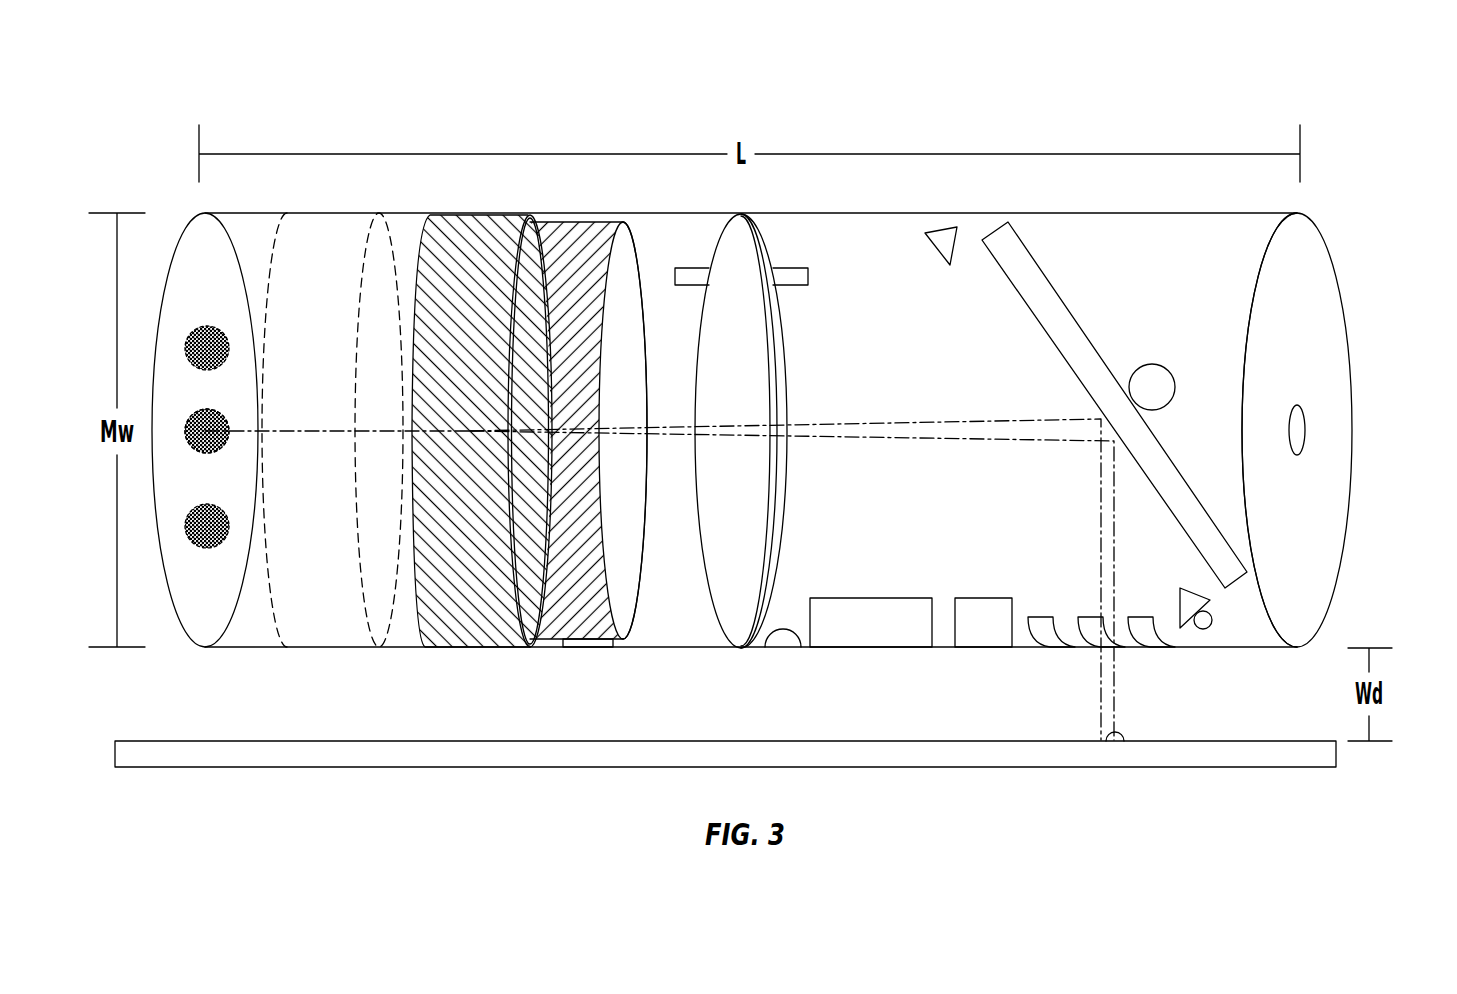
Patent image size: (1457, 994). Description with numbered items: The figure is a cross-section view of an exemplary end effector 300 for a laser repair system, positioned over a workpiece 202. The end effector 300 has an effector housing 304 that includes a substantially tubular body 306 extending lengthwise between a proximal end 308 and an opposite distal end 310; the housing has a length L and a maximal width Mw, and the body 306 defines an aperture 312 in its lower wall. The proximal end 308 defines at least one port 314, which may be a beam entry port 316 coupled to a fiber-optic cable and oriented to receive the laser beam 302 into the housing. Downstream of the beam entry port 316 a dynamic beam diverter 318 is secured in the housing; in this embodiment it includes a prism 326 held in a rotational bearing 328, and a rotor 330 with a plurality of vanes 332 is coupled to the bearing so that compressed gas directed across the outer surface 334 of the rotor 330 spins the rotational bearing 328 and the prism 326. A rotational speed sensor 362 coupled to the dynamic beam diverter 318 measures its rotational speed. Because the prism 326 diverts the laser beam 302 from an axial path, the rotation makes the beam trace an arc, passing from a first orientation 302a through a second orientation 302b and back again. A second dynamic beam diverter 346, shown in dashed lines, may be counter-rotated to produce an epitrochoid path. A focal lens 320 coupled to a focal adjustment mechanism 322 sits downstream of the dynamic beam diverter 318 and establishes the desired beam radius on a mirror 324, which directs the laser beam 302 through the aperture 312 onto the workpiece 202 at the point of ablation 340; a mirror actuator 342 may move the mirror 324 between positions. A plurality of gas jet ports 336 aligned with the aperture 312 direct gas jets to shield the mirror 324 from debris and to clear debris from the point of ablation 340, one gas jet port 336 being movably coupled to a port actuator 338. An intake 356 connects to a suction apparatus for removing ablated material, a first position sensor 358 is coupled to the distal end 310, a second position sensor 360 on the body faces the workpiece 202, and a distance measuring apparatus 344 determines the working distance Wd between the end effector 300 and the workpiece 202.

The end effector 300 is at (1203, 77).
The workpiece 202 is at (164, 740).
The laser beam 302 is at (318, 434).
The first orientation 302a is at (820, 425).
The second orientation 302b is at (820, 437).
The effector housing 304 is at (1323, 195).
The body 306 is at (1172, 212).
The proximal end 308 is at (170, 248).
The distal end 310 is at (1298, 280).
The aperture 312 is at (1136, 617).
The port 314 is at (212, 330).
The beam entry port 316 is at (215, 428).
The dynamic beam diverter 318 is at (514, 210).
The focal lens 320 is at (743, 228).
The focal adjustment mechanism 322 is at (793, 272).
The mirror 324 is at (1052, 302).
The prism 326 is at (528, 596).
The rotational bearing 328 is at (462, 640).
The rotor 330 is at (618, 585).
The vanes 332 is at (597, 240).
The outer surface 334 is at (563, 240).
The gas jet ports 336 is at (940, 248).
The port actuator 338 is at (1214, 618).
The point of ablation 340 is at (1118, 730).
The mirror actuator 342 is at (1152, 375).
The distance measuring apparatus 344 is at (848, 598).
The second dynamic beam diverter 346 is at (318, 232).
The intake 356 is at (965, 639).
The first position sensor 358 is at (1306, 432).
The second position sensor 360 is at (780, 640).
The rotational speed sensor 362 is at (590, 645).